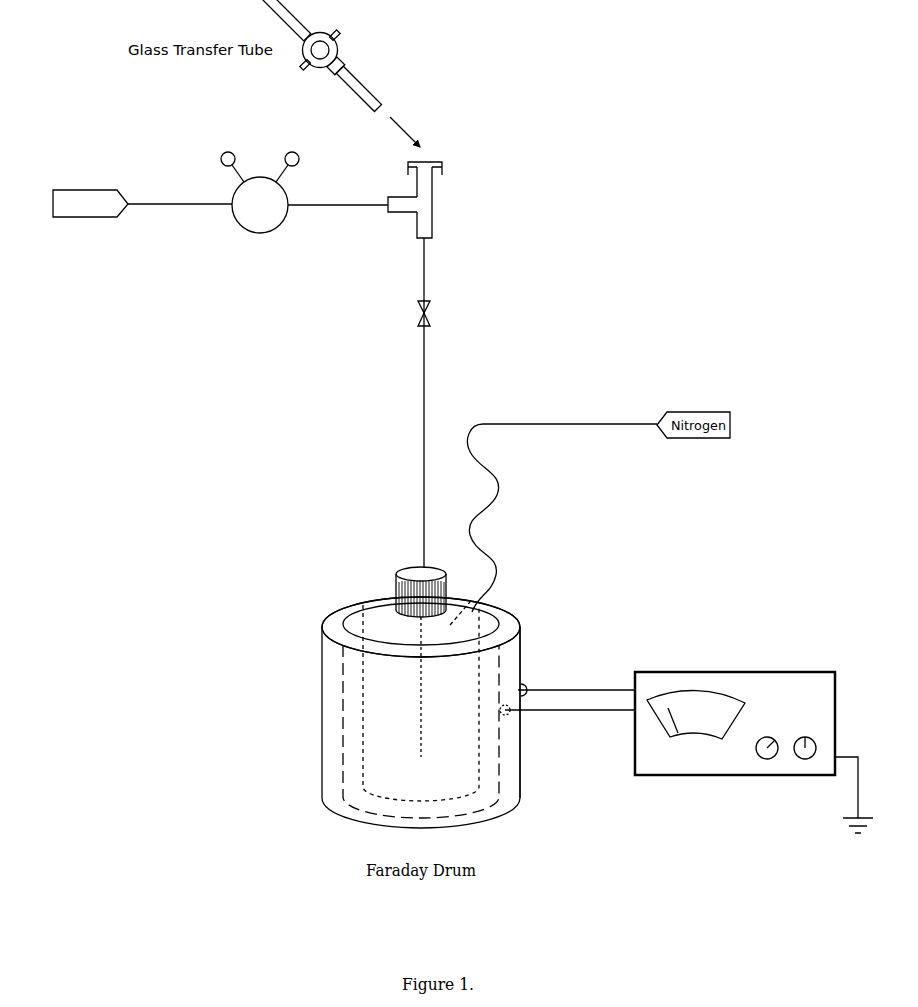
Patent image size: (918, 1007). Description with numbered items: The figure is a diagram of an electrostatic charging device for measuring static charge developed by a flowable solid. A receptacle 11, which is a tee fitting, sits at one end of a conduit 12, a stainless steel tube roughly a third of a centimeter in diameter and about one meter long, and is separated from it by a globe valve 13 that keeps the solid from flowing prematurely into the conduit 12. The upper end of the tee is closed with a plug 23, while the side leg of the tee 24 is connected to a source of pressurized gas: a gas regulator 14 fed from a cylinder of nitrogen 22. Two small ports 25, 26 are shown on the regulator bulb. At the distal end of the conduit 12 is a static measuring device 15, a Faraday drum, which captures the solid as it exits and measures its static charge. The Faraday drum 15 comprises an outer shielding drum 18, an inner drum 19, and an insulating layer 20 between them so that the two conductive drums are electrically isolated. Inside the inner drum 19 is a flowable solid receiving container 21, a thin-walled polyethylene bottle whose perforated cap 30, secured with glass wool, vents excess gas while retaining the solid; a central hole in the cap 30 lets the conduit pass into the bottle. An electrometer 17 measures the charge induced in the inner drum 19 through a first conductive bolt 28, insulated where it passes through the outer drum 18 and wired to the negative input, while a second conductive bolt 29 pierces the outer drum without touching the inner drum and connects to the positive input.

The receptacle 11 is at (436, 201).
The conduit 12 is at (429, 366).
The valve 13 is at (432, 313).
The gas delivery system 14 is at (260, 175).
The static measuring device 15 is at (320, 724).
The electrometer 17 is at (765, 671).
The outer shielding drum 18 is at (521, 617).
The inner drum 19 is at (490, 618).
The insulating layer 20 is at (333, 620).
The flowable solid receiving container 21 is at (377, 605).
The cylinder of nitrogen 22 is at (92, 190).
The plug 23 is at (445, 160).
The side leg of the tee 24 is at (387, 194).
The electrode / side port 25 is at (222, 151).
The electrode / side port 26 is at (298, 151).
The first conductive bolt 28 is at (507, 702).
The second conductive bolt 29 is at (531, 689).
The cap 30 is at (437, 568).